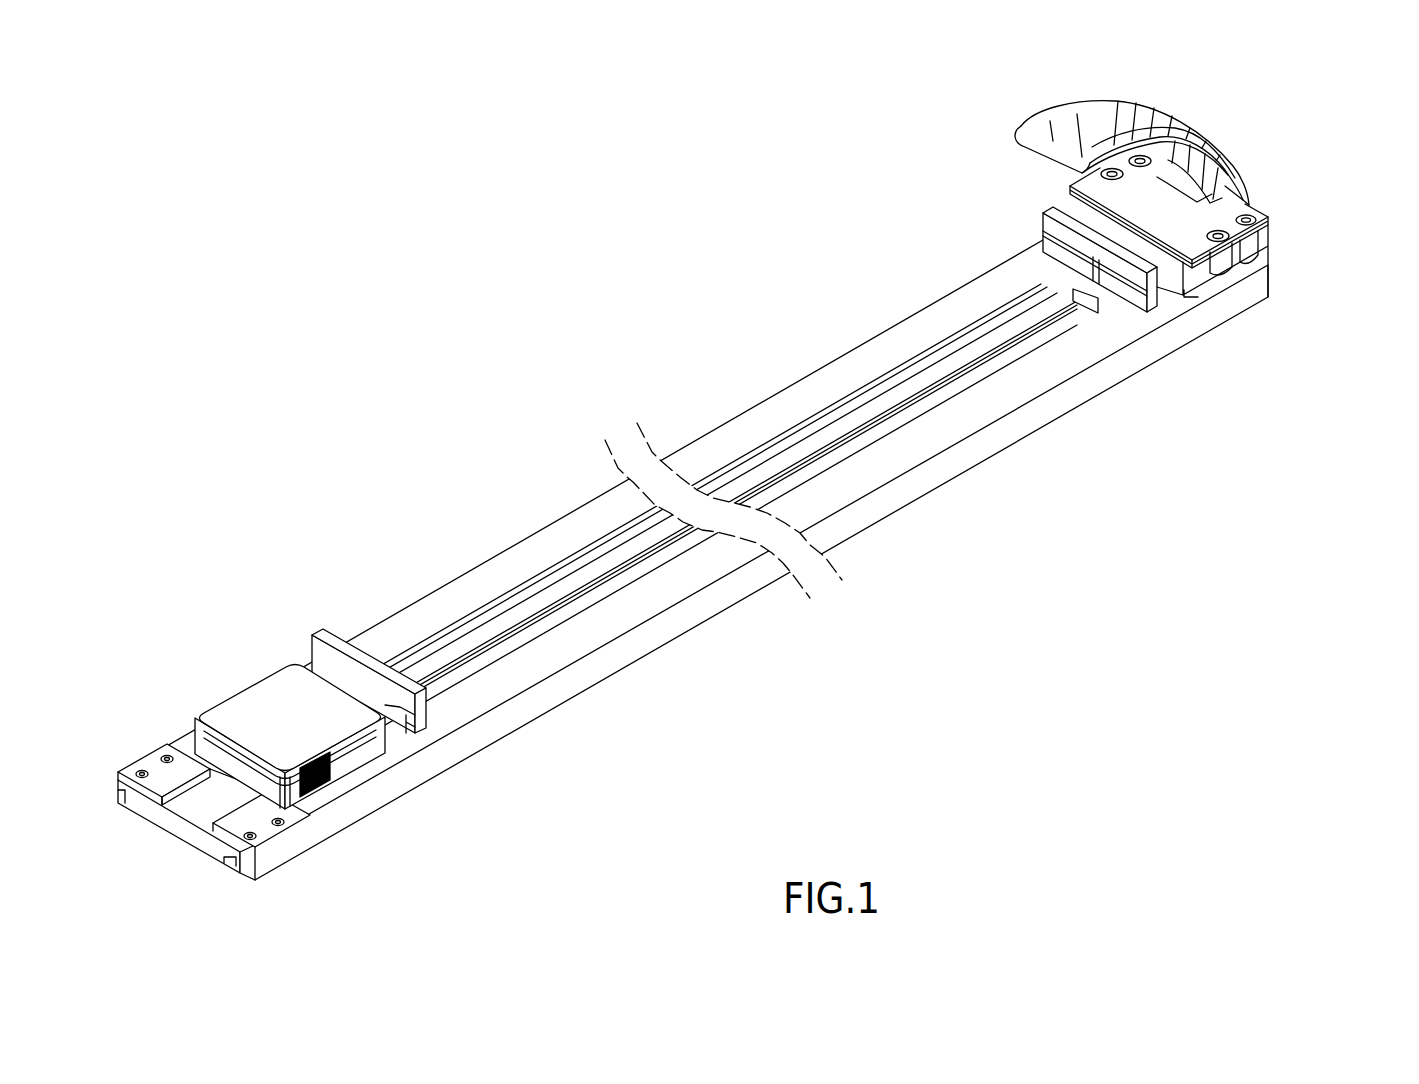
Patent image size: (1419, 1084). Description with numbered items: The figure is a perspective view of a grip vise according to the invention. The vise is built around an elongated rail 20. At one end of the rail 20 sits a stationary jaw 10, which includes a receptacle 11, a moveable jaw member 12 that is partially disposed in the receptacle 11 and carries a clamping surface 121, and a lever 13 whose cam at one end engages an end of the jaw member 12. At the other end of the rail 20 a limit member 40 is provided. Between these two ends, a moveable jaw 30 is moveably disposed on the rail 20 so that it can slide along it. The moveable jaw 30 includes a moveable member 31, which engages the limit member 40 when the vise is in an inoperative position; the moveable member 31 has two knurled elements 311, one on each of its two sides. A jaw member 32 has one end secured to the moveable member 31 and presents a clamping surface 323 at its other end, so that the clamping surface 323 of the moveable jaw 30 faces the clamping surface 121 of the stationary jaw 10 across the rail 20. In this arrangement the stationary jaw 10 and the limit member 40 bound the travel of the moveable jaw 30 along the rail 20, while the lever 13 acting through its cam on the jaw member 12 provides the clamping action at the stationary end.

The stationary jaw 10 is at (1087, 202).
The receptacle 11 is at (1193, 217).
The moveable jaw member 12 is at (1041, 240).
The clamping surface 121 is at (1060, 248).
The lever 13 is at (1083, 127).
The rail 20 is at (779, 395).
The moveable jaw 30 is at (355, 669).
The moveable member 31 is at (347, 729).
The knurled elements 311 is at (317, 792).
The jaw member 32 is at (384, 570).
The clamping surface 323 is at (390, 673).
The limit member 40 is at (182, 835).